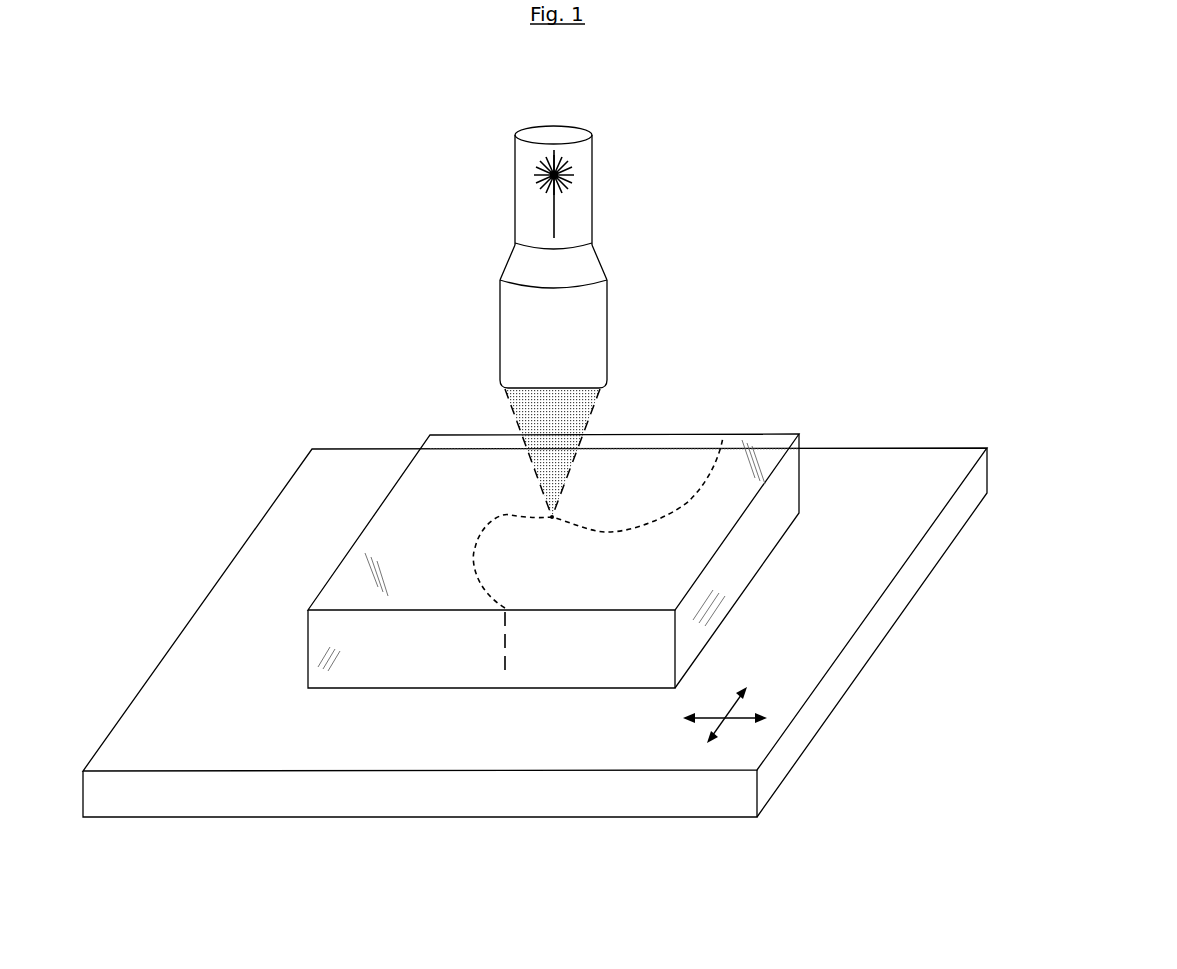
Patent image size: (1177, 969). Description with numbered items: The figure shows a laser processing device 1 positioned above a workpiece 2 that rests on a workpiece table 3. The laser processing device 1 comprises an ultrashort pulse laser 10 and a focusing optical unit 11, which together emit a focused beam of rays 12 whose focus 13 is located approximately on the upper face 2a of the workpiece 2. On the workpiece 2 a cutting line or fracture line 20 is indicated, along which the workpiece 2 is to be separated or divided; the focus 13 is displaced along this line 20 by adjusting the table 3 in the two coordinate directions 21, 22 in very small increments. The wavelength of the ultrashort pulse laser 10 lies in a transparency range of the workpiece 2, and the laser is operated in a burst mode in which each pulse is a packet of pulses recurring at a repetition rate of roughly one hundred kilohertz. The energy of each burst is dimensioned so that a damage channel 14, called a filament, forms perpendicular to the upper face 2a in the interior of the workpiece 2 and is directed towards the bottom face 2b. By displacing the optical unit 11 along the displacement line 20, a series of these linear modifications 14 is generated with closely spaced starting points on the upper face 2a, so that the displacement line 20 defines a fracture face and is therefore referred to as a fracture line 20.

The laser processing device 1 is at (716, 322).
The workpiece 2 is at (799, 434).
The upper face 2a is at (322, 635).
The bottom face 2b is at (358, 688).
The workpiece table 3 is at (965, 527).
The ultrashort pulse laser 10 is at (515, 192).
The focusing optical unit 11 is at (500, 327).
The focused beam of rays 12 is at (513, 410).
The focus 13 is at (438, 436).
The damage channel 14 is at (505, 637).
The fracture line 20 is at (475, 545).
The first coordinate direction 21 is at (707, 743).
The second coordinate direction 22 is at (753, 720).